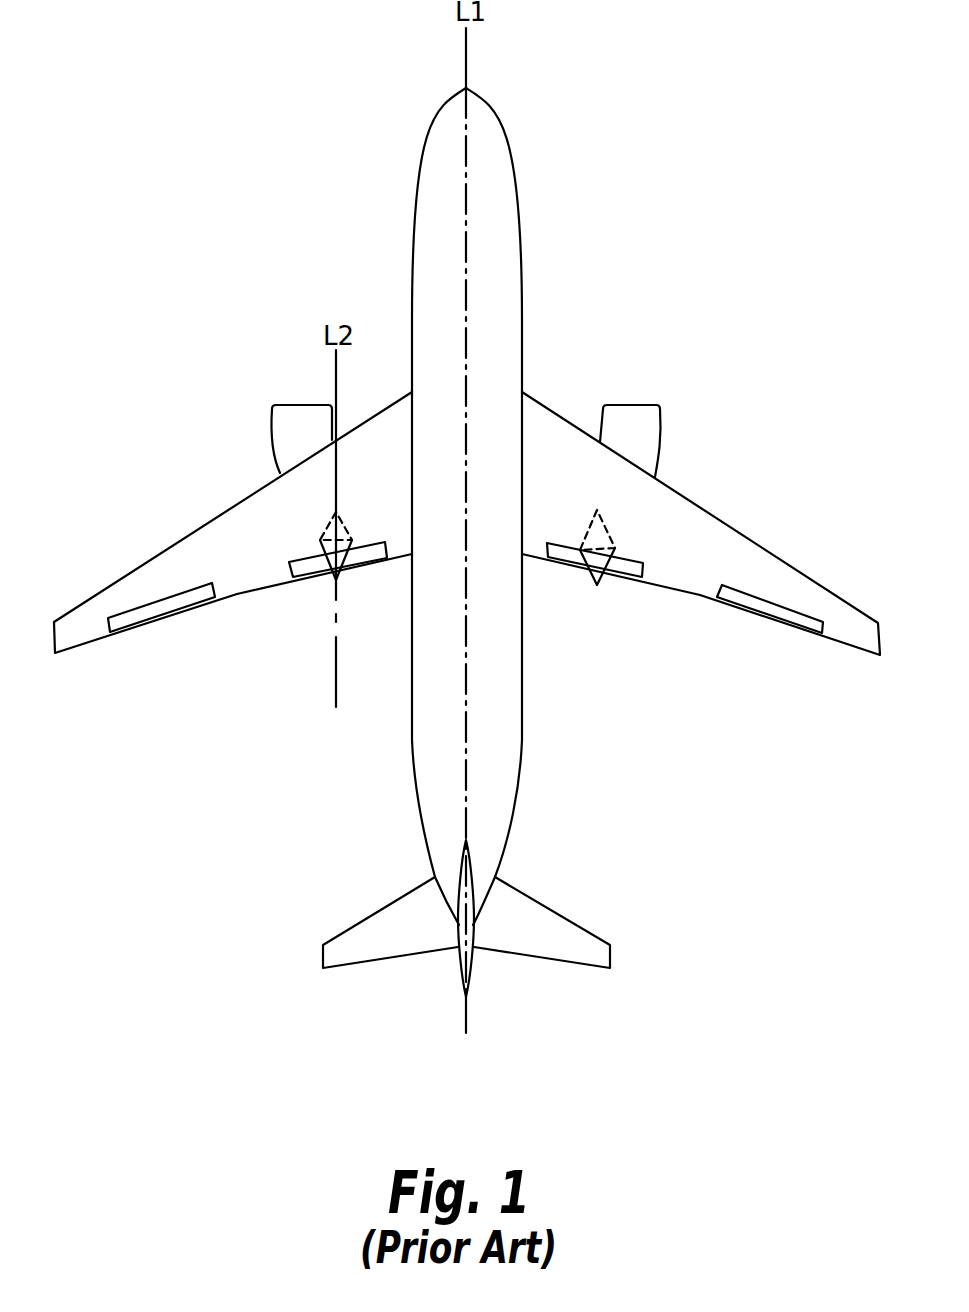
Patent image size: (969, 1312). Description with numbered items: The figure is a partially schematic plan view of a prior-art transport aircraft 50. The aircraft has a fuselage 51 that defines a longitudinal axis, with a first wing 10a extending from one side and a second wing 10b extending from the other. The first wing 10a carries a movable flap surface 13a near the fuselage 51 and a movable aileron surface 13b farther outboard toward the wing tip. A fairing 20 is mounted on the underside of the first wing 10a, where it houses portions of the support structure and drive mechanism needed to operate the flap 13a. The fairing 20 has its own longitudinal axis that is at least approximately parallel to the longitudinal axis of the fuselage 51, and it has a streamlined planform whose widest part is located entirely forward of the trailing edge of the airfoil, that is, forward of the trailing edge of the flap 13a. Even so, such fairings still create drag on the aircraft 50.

The transport aircraft 50 is at (467, 525).
The fuselage 51 is at (518, 713).
The first wing 10a is at (233, 547).
The second wing 10b is at (720, 541).
The movable flap surface 13a is at (311, 573).
The movable aileron surface 13b is at (148, 618).
The fairing 20 is at (320, 537).